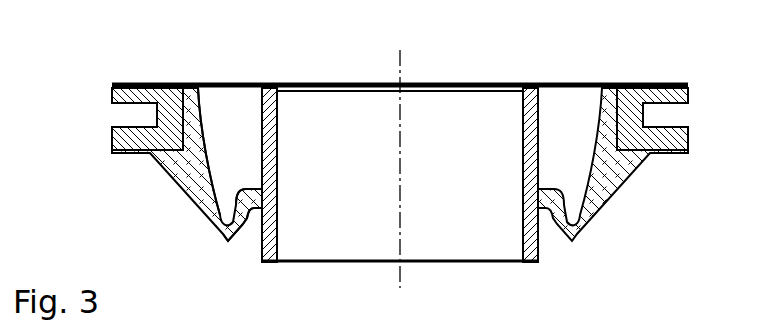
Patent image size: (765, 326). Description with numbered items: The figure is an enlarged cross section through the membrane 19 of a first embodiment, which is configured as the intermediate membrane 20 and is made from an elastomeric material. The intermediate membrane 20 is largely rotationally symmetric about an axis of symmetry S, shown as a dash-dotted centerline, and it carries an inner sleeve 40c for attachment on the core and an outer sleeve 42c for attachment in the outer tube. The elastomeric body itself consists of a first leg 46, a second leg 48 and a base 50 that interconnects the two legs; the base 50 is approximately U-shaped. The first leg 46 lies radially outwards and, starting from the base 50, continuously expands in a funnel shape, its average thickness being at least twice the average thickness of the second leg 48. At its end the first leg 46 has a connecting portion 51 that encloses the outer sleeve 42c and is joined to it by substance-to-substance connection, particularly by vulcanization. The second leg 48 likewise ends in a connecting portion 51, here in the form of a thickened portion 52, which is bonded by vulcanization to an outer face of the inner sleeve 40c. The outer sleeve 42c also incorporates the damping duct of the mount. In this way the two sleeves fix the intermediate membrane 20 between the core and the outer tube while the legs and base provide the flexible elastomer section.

The membrane 19 is at (640, 55).
The intermediate membrane 20 is at (592, 210).
The inner sleeve 40c is at (280, 117).
The outer sleeve 42c is at (118, 152).
The first leg 46 is at (168, 186).
The second leg 48 is at (280, 220).
The base 50 is at (227, 243).
The connecting portion 51 is at (238, 188).
The thickened portion 52 is at (280, 188).
The axis of symmetry S is at (404, 56).